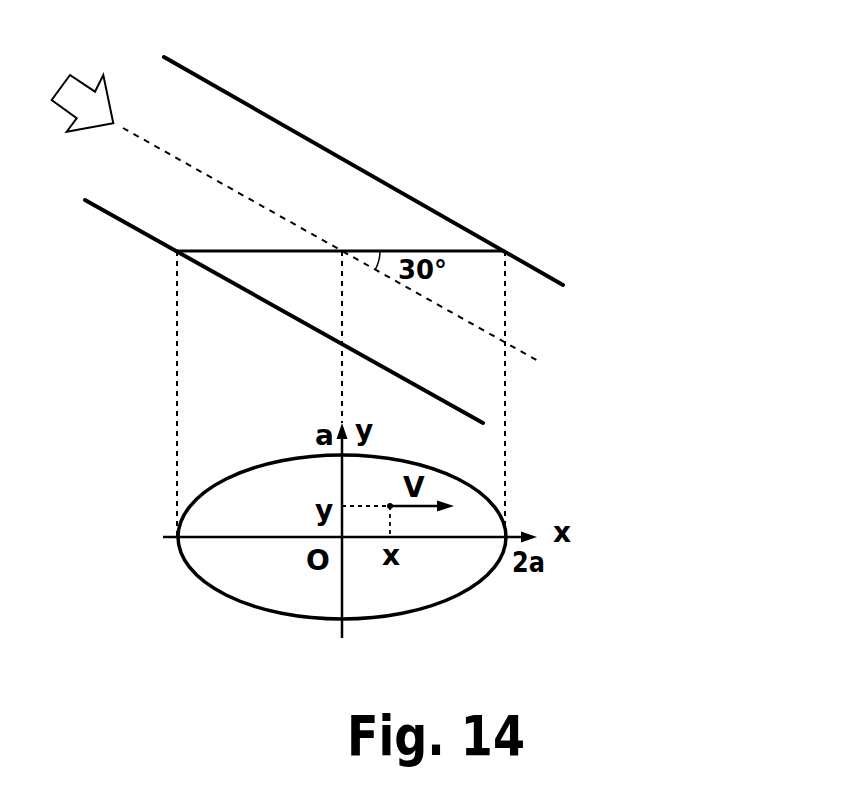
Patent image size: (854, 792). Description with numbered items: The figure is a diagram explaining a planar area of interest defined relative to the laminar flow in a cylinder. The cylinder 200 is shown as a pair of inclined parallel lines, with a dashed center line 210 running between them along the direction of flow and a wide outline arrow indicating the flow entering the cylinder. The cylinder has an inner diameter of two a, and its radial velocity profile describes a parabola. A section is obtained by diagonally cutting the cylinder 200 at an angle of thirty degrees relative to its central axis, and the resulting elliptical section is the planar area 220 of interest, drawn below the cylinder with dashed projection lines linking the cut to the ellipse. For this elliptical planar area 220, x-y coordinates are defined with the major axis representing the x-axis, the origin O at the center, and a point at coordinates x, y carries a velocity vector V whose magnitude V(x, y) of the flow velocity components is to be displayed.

The cylinder 200 is at (403, 192).
The beam center axis (dashed incident direction line) 210 is at (540, 362).
The planar area of interest 220 is at (468, 568).